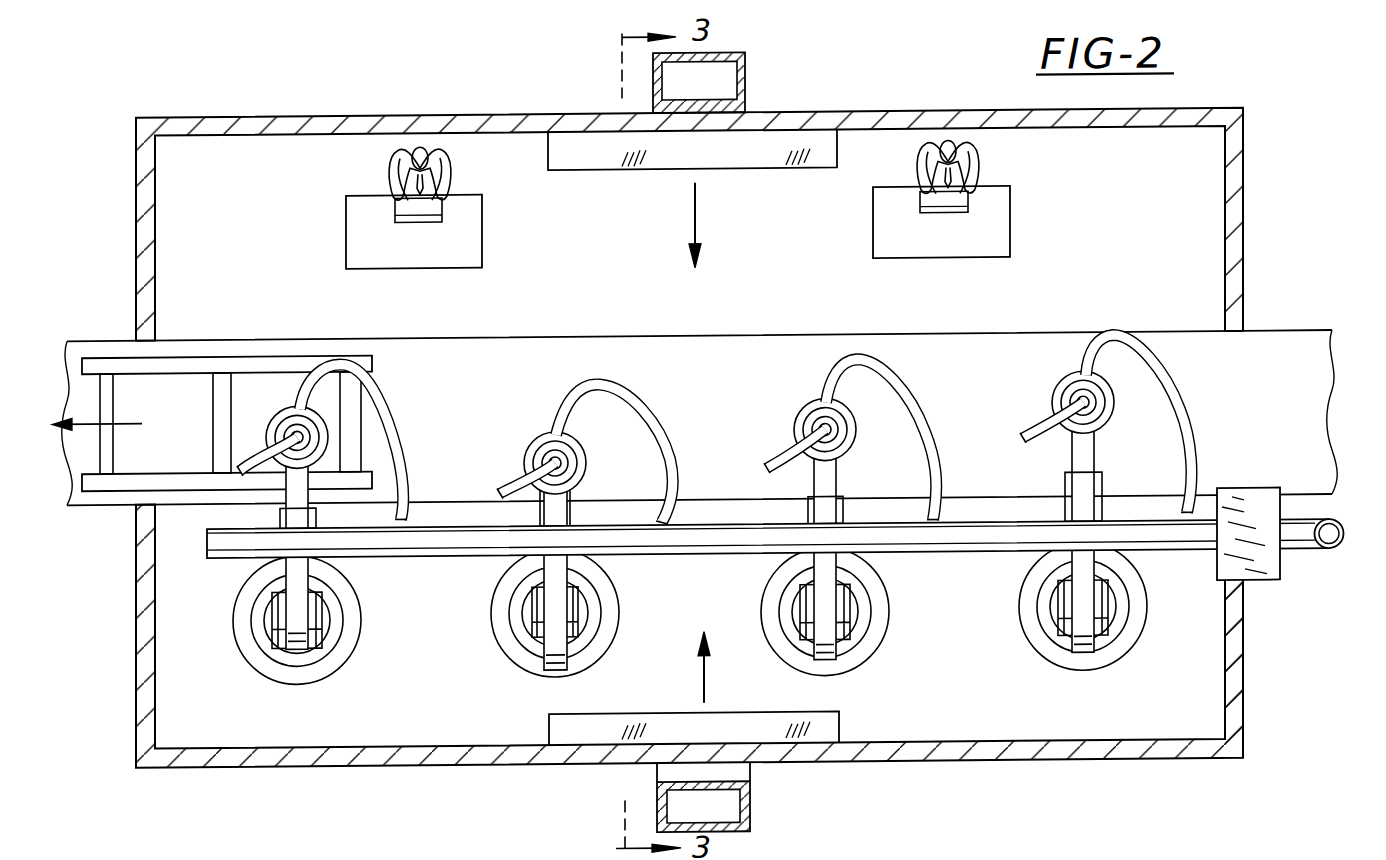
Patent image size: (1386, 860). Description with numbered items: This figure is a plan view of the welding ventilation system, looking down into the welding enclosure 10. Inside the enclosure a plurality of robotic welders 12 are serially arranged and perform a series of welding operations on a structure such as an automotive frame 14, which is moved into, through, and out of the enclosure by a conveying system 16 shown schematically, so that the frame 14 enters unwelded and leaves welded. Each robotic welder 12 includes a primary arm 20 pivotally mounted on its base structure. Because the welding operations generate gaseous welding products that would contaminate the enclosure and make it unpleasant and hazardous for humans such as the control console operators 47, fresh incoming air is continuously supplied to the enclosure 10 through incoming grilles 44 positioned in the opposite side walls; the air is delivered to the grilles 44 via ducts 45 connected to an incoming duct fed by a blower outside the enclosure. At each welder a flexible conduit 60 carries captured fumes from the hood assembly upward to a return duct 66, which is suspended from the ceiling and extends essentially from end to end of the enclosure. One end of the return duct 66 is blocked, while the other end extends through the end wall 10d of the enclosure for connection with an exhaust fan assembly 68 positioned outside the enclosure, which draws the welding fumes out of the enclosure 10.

The welding enclosure 10 is at (1250, 217).
The end wall 10d is at (1245, 708).
The robotic welder 12 is at (303, 694).
The automotive frame 14 is at (266, 338).
The conveying system 16 is at (722, 342).
The primary arm 20 is at (312, 581).
The incoming grille 44 is at (591, 160).
The duct 45 is at (747, 94).
The control console operator 47 is at (368, 165).
The flexible conduit 60 is at (395, 424).
The return duct 66 is at (677, 560).
The exhaust fan assembly 68 is at (1287, 578).